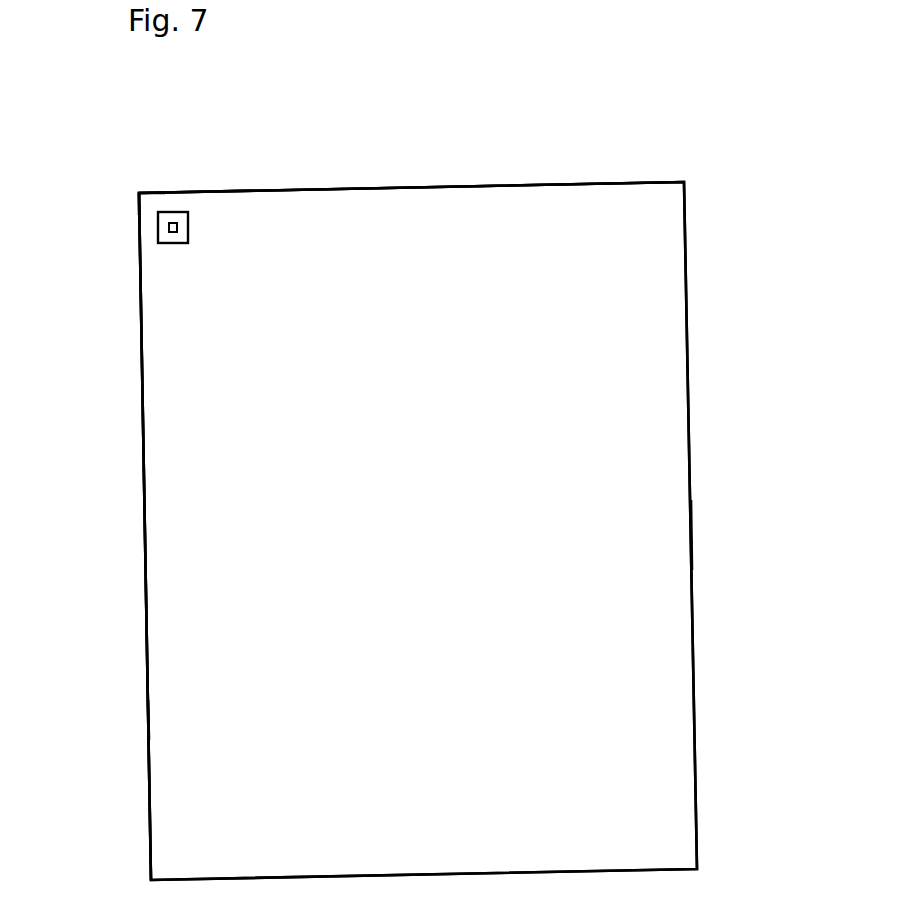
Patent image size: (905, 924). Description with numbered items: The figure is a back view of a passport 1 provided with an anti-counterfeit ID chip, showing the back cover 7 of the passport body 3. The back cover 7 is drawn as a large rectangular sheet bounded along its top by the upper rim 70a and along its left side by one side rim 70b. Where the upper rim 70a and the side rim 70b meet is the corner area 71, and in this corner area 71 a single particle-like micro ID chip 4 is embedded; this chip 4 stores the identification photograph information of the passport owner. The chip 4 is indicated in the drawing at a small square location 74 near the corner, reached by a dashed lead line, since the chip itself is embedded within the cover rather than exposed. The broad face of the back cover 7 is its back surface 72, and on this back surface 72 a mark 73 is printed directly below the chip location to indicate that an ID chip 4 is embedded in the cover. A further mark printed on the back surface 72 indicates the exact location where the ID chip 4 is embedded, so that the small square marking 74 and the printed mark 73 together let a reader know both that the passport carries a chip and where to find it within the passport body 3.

The image forming apparatus 1 is at (728, 207).
The passport body 3 is at (700, 534).
The micro ID chip 4 is at (168, 227).
The back cover 7 is at (157, 472).
The upper rim 70a is at (420, 187).
The side rim 70b is at (145, 602).
The corner area 71 is at (148, 208).
The back surface 72 is at (200, 713).
The mark 73 is at (158, 262).
The chip mounting area 74 is at (175, 213).